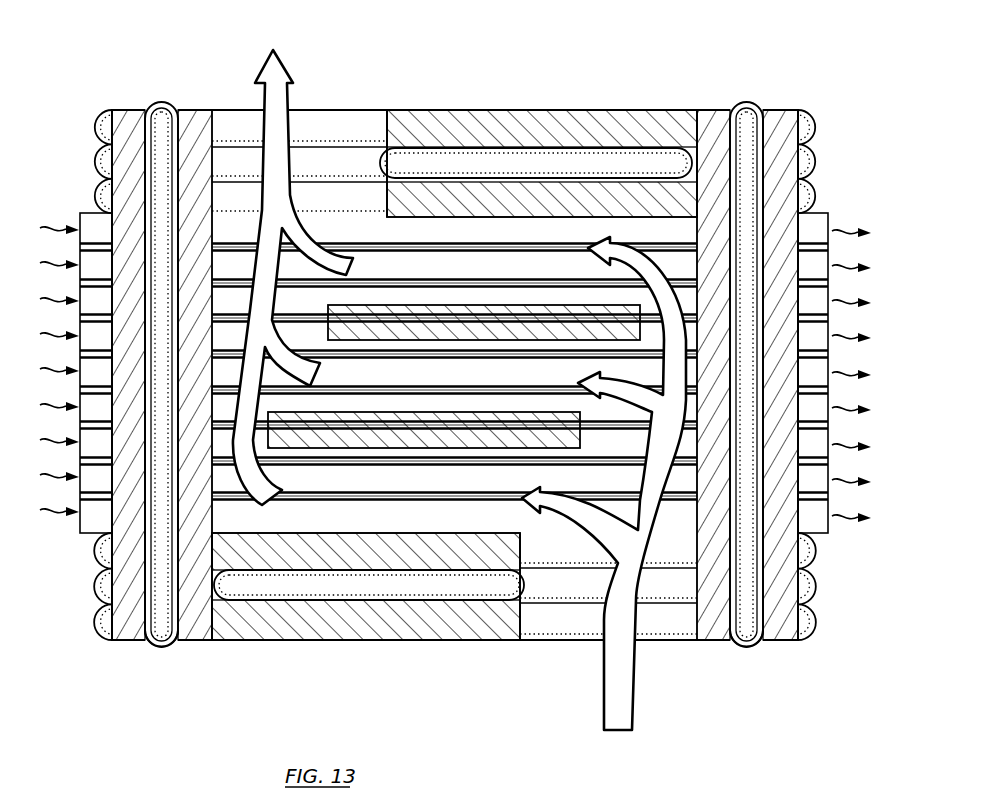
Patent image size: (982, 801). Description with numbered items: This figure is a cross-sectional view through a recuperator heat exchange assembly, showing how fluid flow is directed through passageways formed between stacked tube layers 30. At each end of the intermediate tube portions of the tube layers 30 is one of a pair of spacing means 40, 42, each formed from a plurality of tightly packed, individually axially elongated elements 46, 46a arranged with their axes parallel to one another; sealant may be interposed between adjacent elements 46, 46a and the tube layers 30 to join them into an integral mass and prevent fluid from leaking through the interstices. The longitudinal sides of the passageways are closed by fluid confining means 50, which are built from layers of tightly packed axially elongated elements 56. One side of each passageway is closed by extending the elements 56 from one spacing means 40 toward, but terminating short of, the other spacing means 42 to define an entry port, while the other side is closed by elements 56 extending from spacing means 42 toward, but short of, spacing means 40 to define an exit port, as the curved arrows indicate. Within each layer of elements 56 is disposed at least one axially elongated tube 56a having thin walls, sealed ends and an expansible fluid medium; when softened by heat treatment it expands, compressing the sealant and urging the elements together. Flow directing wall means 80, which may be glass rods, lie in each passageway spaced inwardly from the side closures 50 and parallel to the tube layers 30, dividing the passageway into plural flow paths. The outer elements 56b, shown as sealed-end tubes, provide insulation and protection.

The tube layers 30 is at (376, 515).
The spacing means 40 is at (112, 160).
The spacing means 42 is at (798, 165).
The axially elongated elements 46 is at (182, 110).
The axially elongated elements 46a is at (155, 640).
The fluid confining means 50 is at (541, 118).
The axially elongated elements 56 is at (382, 160).
The axially elongated tube 56a is at (438, 158).
The elements 56b is at (810, 128).
The flow directing wall means 80 is at (445, 412).